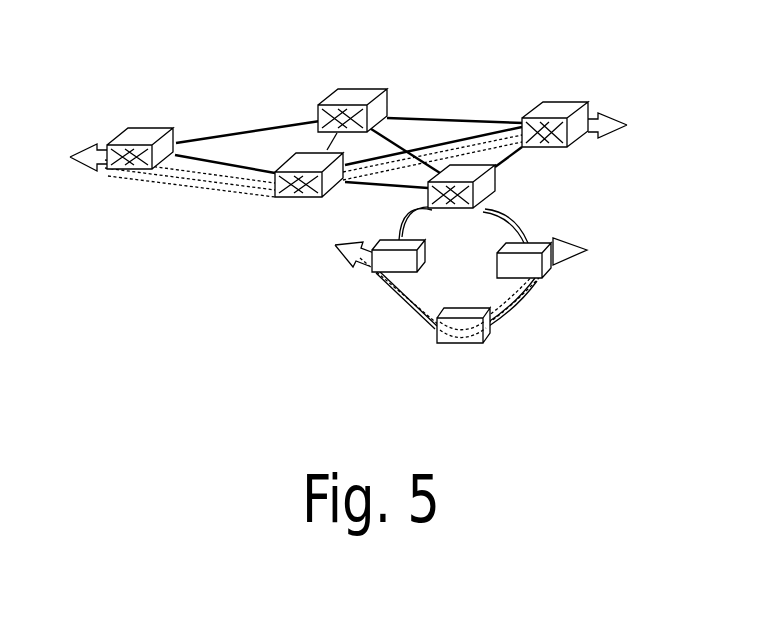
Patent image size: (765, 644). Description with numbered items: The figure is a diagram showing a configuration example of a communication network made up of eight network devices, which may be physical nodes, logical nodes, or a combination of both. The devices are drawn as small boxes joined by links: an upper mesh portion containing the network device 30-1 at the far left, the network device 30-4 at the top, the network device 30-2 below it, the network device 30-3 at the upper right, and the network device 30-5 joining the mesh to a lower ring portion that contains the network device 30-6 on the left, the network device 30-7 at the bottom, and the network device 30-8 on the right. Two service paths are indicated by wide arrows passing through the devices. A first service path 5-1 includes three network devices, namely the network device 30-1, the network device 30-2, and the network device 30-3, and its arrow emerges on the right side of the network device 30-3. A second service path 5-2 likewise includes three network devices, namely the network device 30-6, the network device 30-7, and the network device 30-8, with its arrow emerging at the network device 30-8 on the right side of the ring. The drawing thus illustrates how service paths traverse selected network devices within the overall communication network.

The network device 30-1 is at (148, 128).
The network device 30-2 is at (303, 200).
The network device 30-3 is at (577, 84).
The network device 30-4 is at (362, 88).
The network device 30-5 is at (493, 193).
The network device 30-6 is at (400, 236).
The network device 30-7 is at (461, 347).
The network device 30-8 is at (552, 280).
The service path 5-1 is at (600, 114).
The service path 5-2 is at (570, 244).